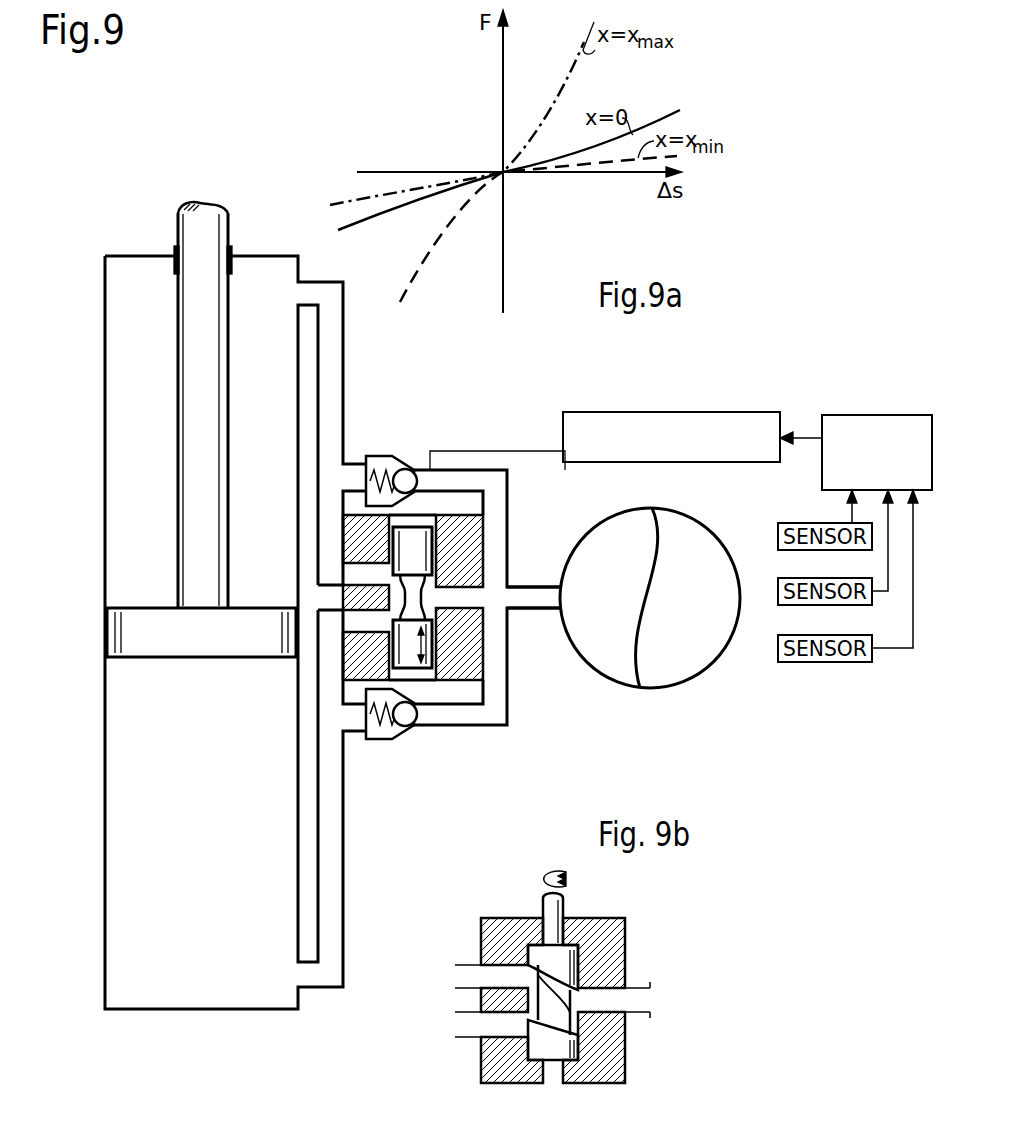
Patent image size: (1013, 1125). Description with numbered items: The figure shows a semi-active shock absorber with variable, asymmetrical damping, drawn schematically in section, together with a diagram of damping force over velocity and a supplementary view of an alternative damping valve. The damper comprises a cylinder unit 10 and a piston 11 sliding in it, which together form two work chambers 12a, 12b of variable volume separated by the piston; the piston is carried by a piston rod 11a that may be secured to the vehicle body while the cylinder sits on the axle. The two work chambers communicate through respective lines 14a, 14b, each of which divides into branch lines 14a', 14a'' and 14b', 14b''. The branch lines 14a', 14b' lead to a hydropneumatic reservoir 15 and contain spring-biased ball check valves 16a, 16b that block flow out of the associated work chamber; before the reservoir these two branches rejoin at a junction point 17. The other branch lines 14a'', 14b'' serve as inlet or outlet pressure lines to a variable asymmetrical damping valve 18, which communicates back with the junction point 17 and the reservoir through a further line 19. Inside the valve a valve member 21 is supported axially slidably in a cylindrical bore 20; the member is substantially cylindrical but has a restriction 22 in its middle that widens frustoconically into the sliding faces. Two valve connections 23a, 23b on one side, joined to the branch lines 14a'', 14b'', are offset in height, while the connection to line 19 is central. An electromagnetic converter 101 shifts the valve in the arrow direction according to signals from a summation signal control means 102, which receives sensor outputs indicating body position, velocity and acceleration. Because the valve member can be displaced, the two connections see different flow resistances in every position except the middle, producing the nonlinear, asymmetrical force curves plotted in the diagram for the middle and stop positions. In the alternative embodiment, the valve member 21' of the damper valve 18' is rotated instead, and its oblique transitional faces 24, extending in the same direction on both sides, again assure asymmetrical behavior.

In FIG. 9, the cylinder unit 10 is at (106, 904).
In FIG. 9, the piston 11 is at (117, 631).
In FIG. 9, the piston rod 11a is at (218, 225).
In FIG. 9, the upper work chamber 12a is at (118, 439).
In FIG. 9, the lower work chamber 12b is at (128, 784).
In FIG. 9, the line 14a is at (350, 458).
In FIG. 9, the line 14b is at (350, 786).
In FIG. 9, the branch line 14a' is at (436, 481).
In FIG. 9, the branch line 14b' is at (461, 737).
In FIG. 9, the branch line 14a'' is at (290, 538).
In FIG. 9, the branch line 14b'' is at (290, 671).
In FIG. 9, the reservoir 15 is at (616, 532).
In FIG. 9, the check valve 16a is at (370, 456).
In FIG. 9, the check valve 16b is at (372, 741).
In FIG. 9, the junction point 17 is at (498, 600).
In FIG. 9, the variable asymmetrical damping valve 18 is at (454, 573).
In FIG. 9, the line 19 is at (462, 598).
In FIG. 9, the cylindrical bore 20 is at (433, 672).
In FIG. 9, the valve member 21 is at (448, 608).
In FIG. 9, the restriction 22 is at (452, 682).
In FIG. 9, the valve connection 23a is at (363, 578).
In FIG. 9, the valve connection 23b is at (363, 621).
In FIG. 9, the electromagnetic converter 101 is at (769, 388).
In FIG. 9, the summation signal control means 102 is at (859, 415).
In FIG. 9B, the valve member 21' is at (572, 952).
In FIG. 9B, the helical control groove 24 is at (575, 995).
In FIG. 9B, the damper valve 18' is at (581, 1003).